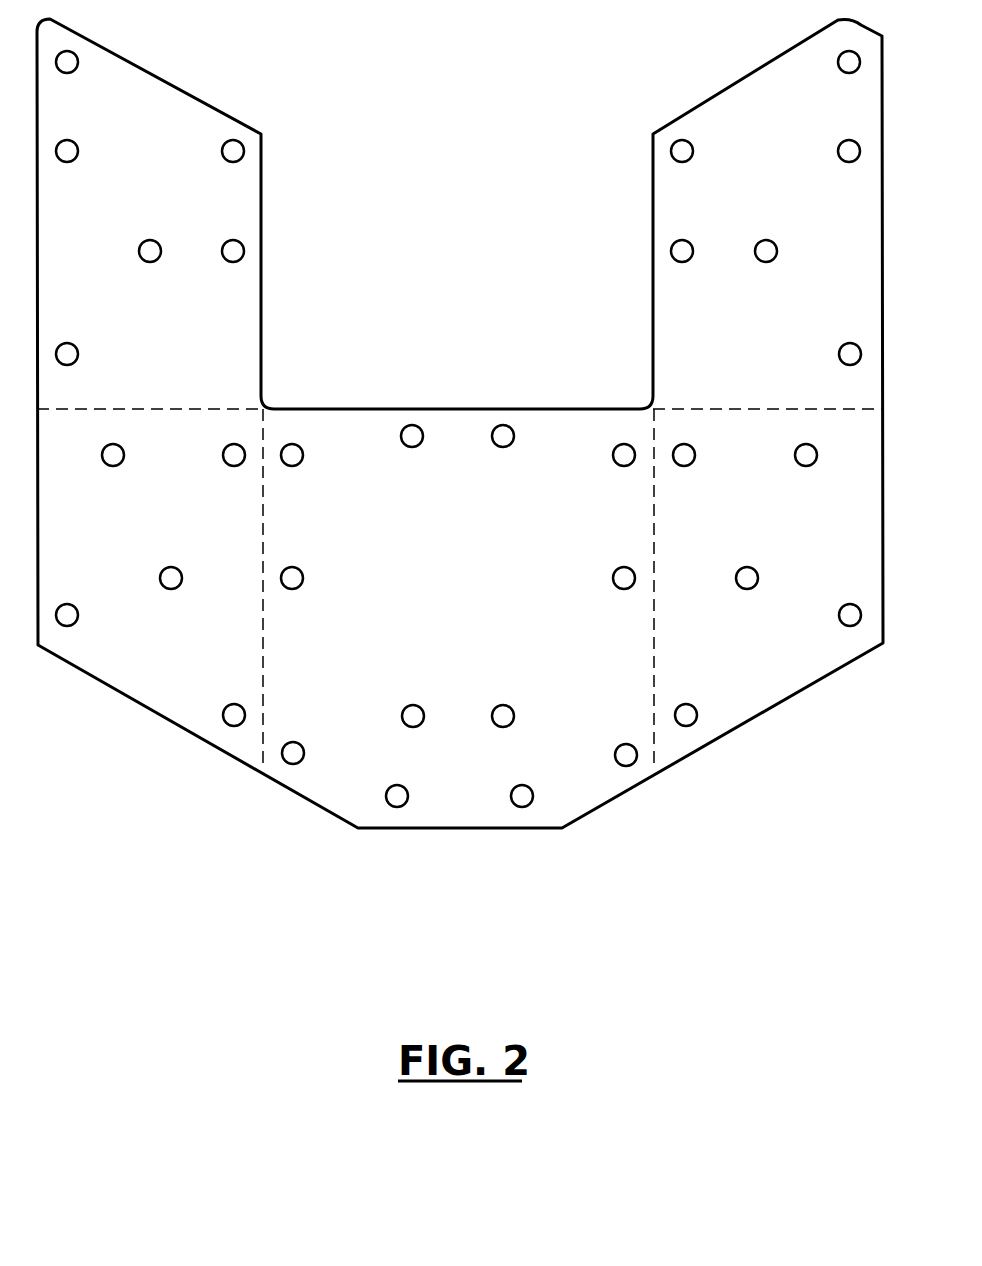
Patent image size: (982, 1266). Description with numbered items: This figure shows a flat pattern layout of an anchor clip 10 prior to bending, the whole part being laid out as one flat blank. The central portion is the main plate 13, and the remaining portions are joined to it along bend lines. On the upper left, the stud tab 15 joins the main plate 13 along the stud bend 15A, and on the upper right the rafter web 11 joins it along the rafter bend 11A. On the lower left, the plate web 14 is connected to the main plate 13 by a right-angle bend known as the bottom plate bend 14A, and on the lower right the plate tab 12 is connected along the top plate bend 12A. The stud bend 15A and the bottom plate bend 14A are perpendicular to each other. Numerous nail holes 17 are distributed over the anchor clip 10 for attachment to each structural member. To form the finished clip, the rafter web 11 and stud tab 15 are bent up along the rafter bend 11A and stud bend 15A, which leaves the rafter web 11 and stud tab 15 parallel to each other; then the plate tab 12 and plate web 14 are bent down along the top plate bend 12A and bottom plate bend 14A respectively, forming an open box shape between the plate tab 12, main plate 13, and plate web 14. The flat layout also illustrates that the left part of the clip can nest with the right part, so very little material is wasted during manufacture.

The anchor clip 10 is at (571, 780).
The rafter web 11 is at (759, 106).
The rafter bend 11A is at (690, 408).
The plate tab 12 is at (755, 692).
The top plate bend 12A is at (655, 737).
The main plate 13 is at (352, 760).
The plate web 14 is at (172, 670).
The bottom plate bend 14A is at (263, 737).
The stud tab 15 is at (133, 100).
The stud bend 15A is at (208, 408).
The nail holes 17 is at (238, 249).